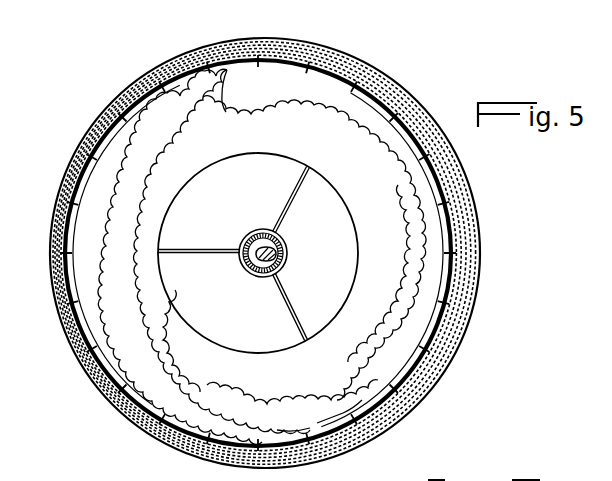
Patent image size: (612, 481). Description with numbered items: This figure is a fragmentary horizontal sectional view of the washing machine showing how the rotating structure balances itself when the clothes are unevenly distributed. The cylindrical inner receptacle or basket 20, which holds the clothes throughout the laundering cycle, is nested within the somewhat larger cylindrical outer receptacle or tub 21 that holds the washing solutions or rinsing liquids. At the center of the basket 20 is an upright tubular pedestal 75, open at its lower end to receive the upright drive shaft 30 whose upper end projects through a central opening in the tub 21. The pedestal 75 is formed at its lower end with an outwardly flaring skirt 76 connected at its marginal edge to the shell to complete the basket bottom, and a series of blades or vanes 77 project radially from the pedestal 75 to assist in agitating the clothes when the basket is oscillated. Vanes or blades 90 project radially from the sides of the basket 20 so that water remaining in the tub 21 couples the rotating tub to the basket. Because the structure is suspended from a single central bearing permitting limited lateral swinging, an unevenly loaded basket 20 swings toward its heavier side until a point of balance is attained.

The basket 20 is at (462, 239).
The tub 21 is at (463, 172).
The drive shaft 30 is at (277, 249).
The pedestal 75 is at (261, 231).
The skirt 76 is at (345, 268).
The blades or vanes 77 is at (198, 255).
The vanes or blades 90 is at (462, 323).